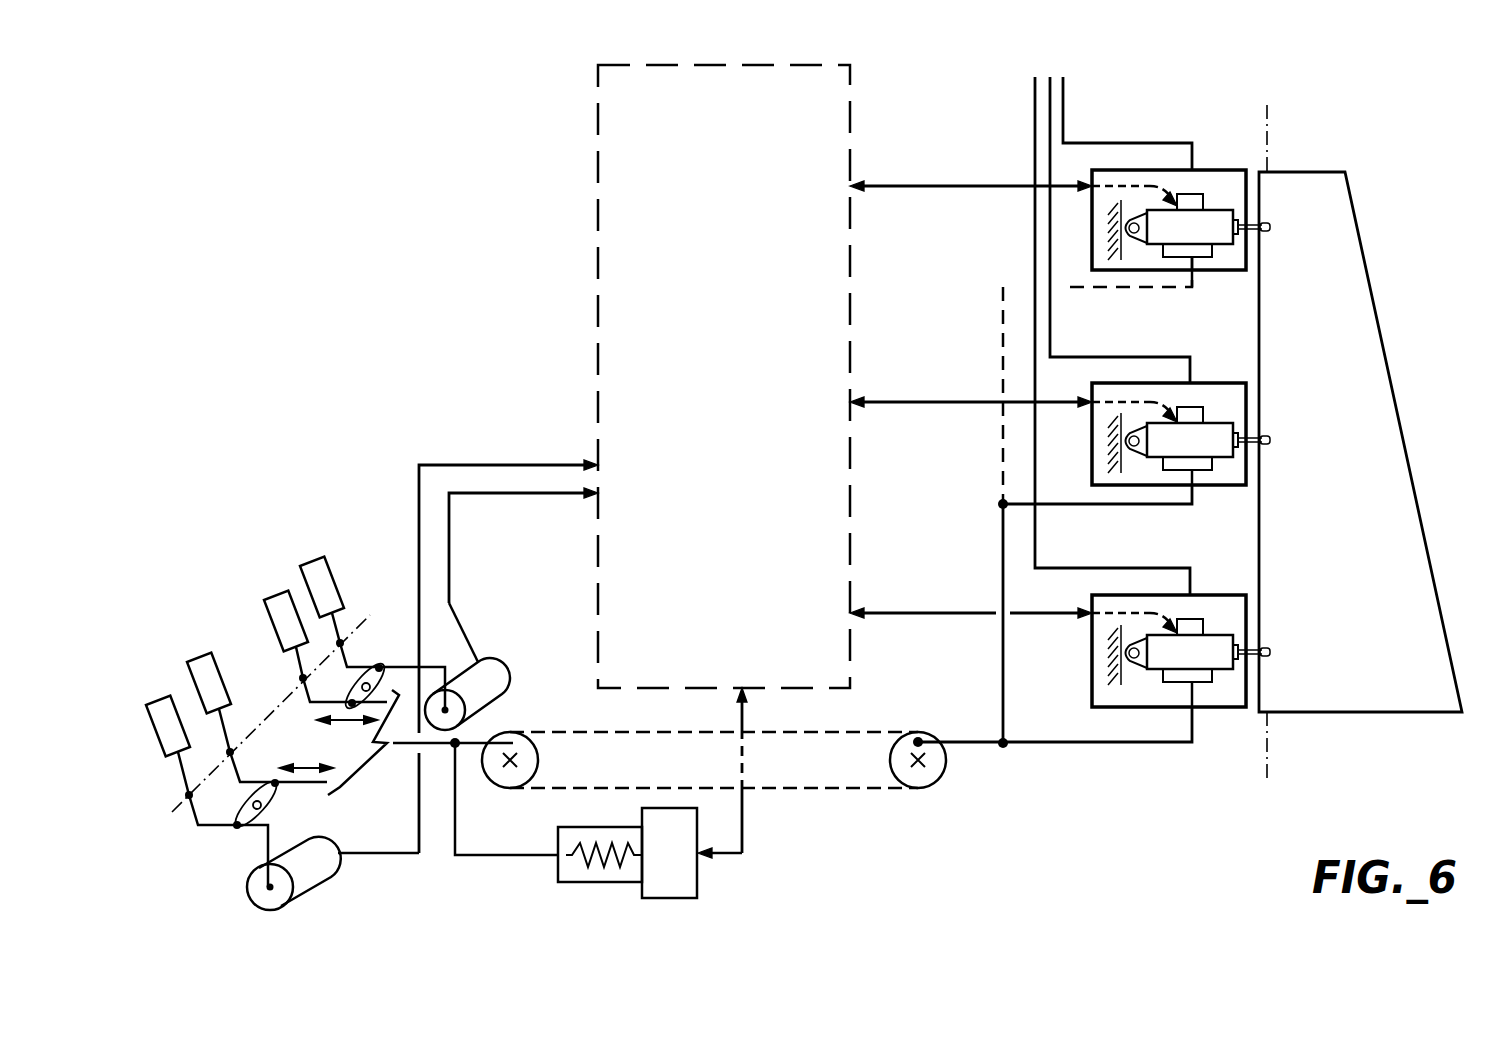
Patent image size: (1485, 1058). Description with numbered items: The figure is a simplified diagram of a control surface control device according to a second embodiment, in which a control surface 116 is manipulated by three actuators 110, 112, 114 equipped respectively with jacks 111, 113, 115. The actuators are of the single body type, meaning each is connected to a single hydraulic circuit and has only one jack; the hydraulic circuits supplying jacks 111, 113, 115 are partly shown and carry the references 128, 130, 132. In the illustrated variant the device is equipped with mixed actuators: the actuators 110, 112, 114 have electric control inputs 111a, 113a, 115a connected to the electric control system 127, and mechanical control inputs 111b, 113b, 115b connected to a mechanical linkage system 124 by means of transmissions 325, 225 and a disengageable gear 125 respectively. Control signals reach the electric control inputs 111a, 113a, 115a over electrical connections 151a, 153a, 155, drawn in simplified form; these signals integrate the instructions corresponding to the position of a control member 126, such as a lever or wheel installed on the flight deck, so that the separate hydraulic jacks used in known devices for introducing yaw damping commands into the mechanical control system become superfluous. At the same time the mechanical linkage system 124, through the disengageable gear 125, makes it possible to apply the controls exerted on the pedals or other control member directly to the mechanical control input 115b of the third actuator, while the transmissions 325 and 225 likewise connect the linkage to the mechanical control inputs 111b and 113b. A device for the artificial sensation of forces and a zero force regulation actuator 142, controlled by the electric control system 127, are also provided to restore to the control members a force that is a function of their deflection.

The actuator 110 is at (1128, 272).
The jack 111 is at (1212, 228).
The electric control input 111a is at (1213, 199).
The mechanical control input 111b is at (1205, 258).
The actuator 112 is at (1228, 383).
The jack 113 is at (1212, 440).
The electric control input 113a is at (1210, 405).
The mechanical control input 113b is at (1210, 465).
The mixed actuator 114 is at (1230, 595).
The jack 115 is at (1215, 650).
The electric control input 115a is at (1210, 617).
The mechanical control input 115b is at (1205, 678).
The control surface 116 is at (1338, 205).
The mechanical linkage system 124 is at (817, 796).
The disengageable gear 125 is at (1058, 756).
The control member 126 is at (218, 648).
The electric control system 127 is at (597, 88).
The hydraulic circuit 128 is at (1065, 115).
The hydraulic circuit 130 is at (1063, 92).
The hydraulic circuit 132 is at (1035, 92).
The zero force regulation actuator 142 is at (688, 890).
The electrical connection 151a is at (877, 184).
The electrical connection 153a is at (920, 400).
The electrical connection 155 is at (940, 611).
The transmission 225 is at (1068, 506).
The transmission 325 is at (1003, 287).